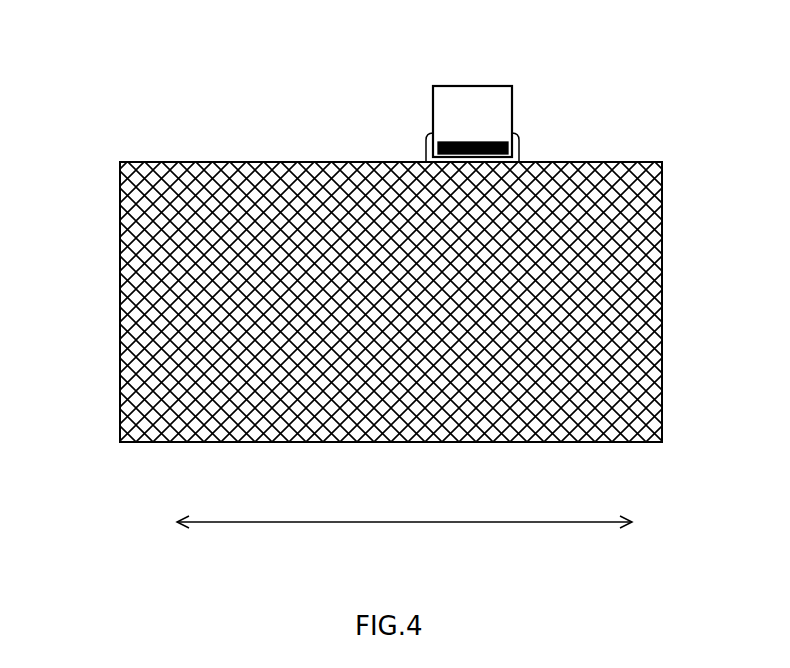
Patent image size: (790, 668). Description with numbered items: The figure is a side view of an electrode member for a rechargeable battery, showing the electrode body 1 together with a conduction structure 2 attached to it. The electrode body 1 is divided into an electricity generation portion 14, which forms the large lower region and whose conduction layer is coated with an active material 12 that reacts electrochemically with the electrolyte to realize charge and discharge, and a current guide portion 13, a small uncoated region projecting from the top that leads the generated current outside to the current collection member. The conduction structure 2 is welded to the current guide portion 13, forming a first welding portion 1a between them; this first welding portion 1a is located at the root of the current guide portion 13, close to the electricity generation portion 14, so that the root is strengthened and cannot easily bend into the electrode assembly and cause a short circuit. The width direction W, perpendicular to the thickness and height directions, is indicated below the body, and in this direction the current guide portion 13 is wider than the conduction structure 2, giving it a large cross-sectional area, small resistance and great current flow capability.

The electrode body 1 is at (527, 161).
The first welding portion 1a is at (517, 142).
The conduction structure 2 is at (483, 93).
The active material 12 is at (240, 297).
The current guide portion 13 is at (428, 143).
The electricity generation portion 14 is at (662, 292).
The width direction W is at (404, 509).